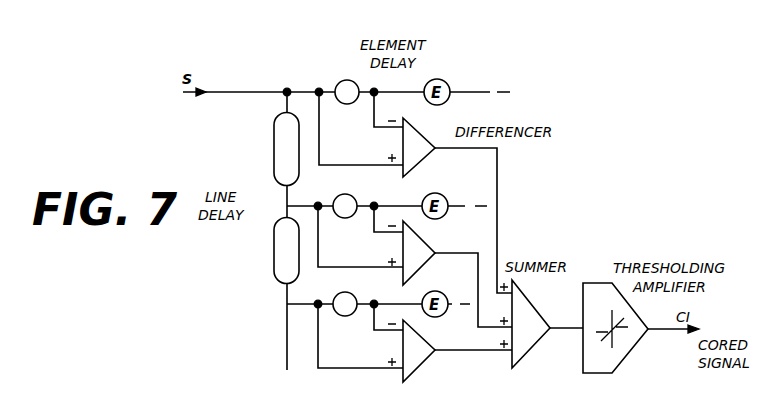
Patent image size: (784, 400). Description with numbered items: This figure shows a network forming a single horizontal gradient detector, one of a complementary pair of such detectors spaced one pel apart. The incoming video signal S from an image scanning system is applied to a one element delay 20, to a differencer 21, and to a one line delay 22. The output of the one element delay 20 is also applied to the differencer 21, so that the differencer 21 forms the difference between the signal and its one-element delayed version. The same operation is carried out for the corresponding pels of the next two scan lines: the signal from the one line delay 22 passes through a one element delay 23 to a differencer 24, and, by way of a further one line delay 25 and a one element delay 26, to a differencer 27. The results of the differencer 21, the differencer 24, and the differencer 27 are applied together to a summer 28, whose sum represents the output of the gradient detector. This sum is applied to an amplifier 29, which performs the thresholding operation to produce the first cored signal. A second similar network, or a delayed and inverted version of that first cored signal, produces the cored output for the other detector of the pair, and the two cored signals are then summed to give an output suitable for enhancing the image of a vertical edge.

The 1 element delay 20 is at (340, 82).
The differencer 21 is at (414, 129).
The 1 line delay 22 is at (274, 131).
The 1 element delay 23 is at (339, 196).
The differencer 24 is at (426, 243).
The 1 line delay 25 is at (274, 256).
The 1 element delay 26 is at (352, 295).
The differencer 27 is at (426, 364).
The summer 28 is at (540, 309).
The amplifier 29 is at (628, 356).